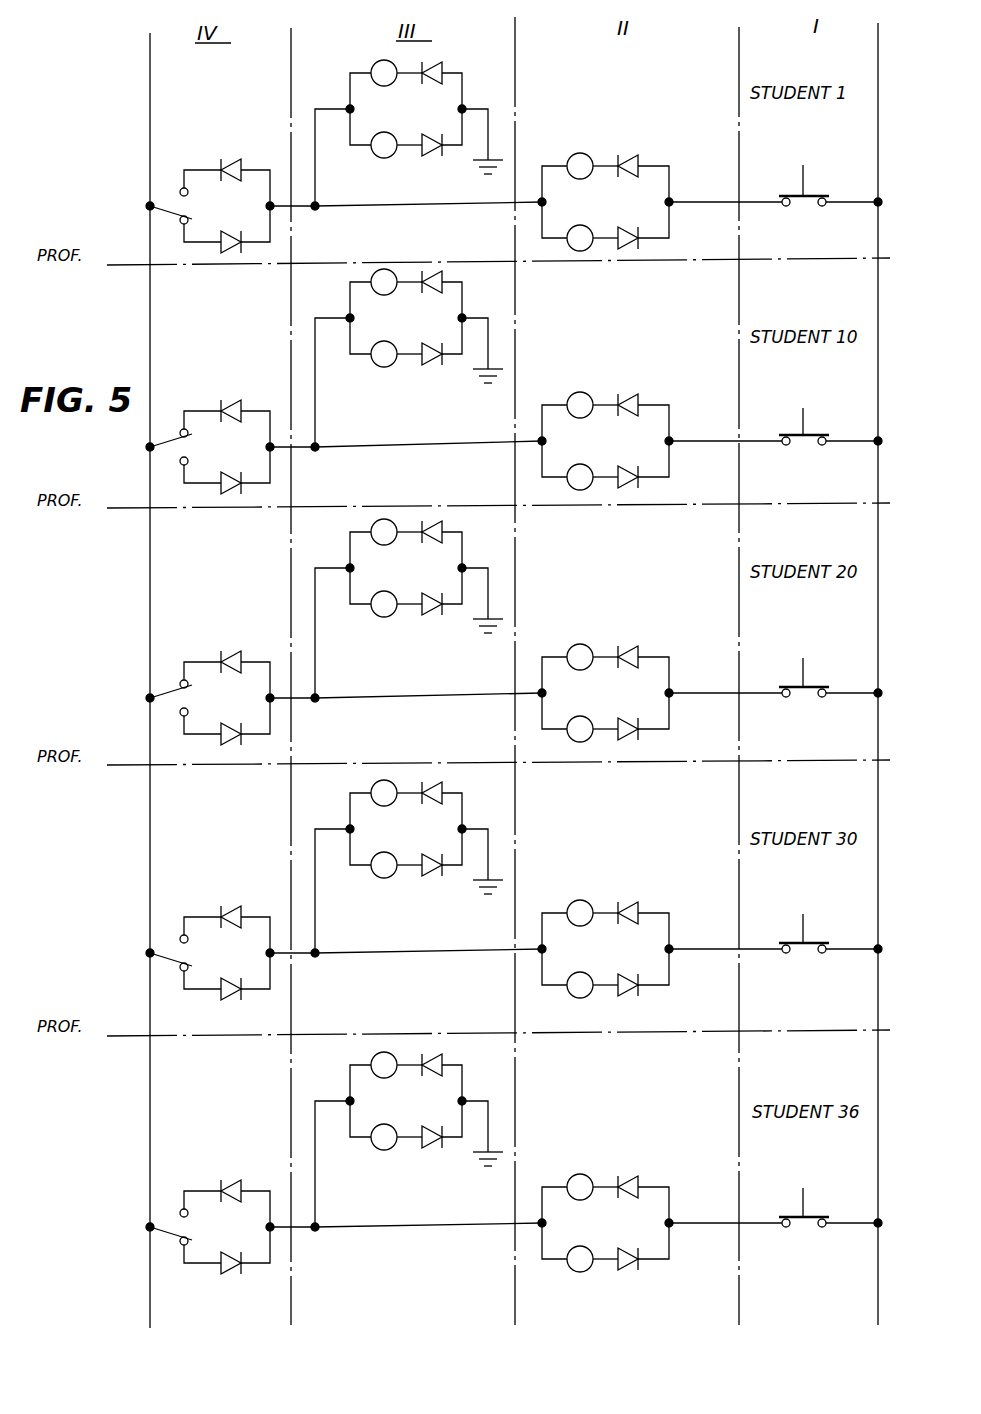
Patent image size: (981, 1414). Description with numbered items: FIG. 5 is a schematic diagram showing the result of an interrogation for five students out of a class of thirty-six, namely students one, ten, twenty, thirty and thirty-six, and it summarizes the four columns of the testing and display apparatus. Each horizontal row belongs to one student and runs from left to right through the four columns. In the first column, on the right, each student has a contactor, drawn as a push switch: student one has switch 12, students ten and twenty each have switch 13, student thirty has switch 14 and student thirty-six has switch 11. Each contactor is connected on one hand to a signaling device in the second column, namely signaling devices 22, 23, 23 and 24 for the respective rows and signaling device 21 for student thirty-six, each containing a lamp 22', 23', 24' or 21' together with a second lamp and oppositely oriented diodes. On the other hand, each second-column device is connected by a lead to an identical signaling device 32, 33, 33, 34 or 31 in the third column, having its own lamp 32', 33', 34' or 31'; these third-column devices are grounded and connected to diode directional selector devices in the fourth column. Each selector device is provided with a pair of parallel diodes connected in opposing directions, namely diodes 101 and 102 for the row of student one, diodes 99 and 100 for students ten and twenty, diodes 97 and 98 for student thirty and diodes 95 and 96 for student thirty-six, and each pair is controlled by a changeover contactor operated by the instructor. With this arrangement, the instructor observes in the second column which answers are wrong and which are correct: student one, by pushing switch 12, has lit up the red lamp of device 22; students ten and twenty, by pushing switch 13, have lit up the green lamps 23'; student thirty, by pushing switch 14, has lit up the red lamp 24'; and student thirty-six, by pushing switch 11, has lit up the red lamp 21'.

The contactor 11 is at (819, 1206).
The contactor 12 is at (817, 185).
The contactor 13 is at (819, 550).
The contactor 14 is at (820, 932).
The signaling device 21 is at (605, 1222).
The red lamp 21' is at (569, 1277).
The signaling device 22 is at (605, 203).
The lamp of signaling device 22' is at (572, 152).
The signaling device 23 is at (605, 568).
The green lamp 23' is at (572, 518).
The signaling device 24 is at (605, 948).
The red lamp 24' is at (569, 1002).
The signaling device 31 is at (409, 1139).
The lamp of signaling device 31' is at (370, 1150).
The signaling device 32 is at (409, 133).
The lamp of signaling device 32' is at (399, 158).
The signaling device 33 is at (409, 484).
The lamp of signaling device 33' is at (363, 403).
The signaling device 34 is at (409, 866).
The lamp of signaling device 34' is at (371, 879).
The diode 95 is at (243, 1276).
The diode 96 is at (244, 1181).
The diode 97 is at (244, 1000).
The diode 98 is at (244, 904).
The diode 99 is at (245, 616).
The diode 100 is at (243, 522).
The diode 101 is at (248, 249).
The diode 102 is at (240, 160).